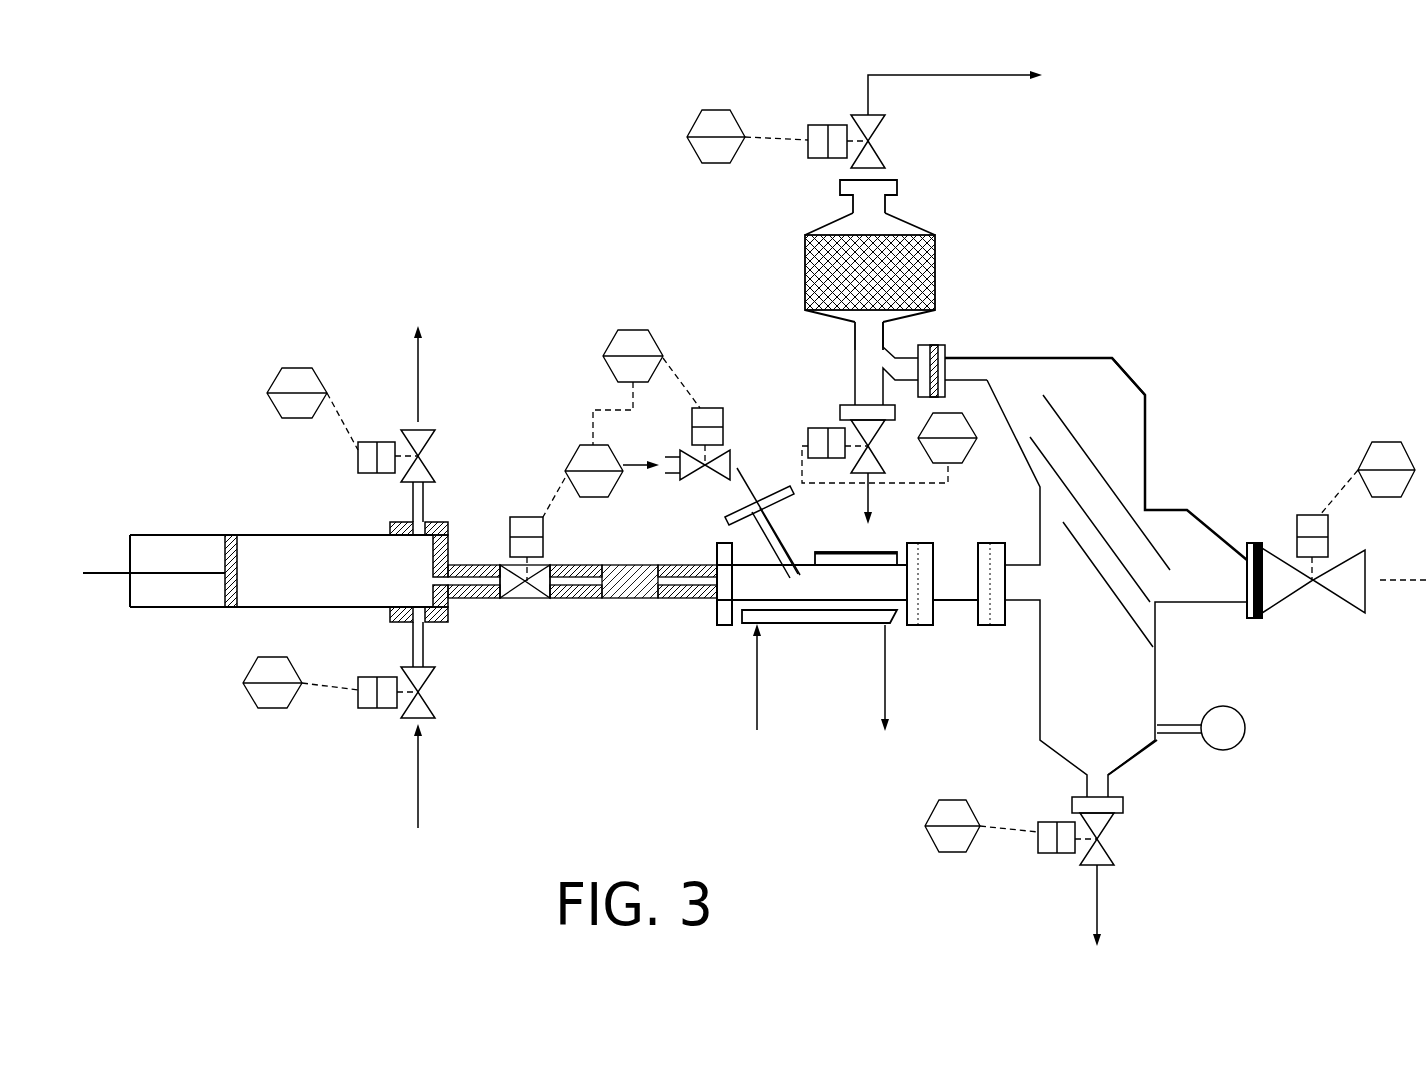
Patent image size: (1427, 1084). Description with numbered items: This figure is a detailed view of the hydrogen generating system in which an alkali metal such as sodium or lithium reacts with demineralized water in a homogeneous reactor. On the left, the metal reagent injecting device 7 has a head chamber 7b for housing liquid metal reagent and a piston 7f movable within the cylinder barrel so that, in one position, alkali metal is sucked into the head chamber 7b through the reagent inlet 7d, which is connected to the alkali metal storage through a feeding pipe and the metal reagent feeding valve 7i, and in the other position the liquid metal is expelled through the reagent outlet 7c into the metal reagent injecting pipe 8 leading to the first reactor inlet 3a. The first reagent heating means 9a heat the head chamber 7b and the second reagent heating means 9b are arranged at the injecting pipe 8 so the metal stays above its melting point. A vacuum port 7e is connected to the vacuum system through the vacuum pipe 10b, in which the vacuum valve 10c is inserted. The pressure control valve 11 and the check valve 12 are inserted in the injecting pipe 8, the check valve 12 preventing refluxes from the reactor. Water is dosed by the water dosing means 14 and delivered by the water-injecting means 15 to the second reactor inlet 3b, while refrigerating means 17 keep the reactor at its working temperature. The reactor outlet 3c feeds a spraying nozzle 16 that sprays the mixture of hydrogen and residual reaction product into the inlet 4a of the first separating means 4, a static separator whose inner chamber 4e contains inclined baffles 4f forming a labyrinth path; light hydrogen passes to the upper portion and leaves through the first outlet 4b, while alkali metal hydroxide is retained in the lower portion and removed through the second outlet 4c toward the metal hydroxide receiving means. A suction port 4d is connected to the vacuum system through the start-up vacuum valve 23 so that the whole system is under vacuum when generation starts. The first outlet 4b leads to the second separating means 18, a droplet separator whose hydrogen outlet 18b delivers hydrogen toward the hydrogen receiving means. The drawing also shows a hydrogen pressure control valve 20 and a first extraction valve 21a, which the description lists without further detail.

The first reactor inlet 3a is at (715, 578).
The second reactor inlet 3b is at (803, 552).
The reactor outlet 3c is at (913, 590).
The first separating means 4 is at (1130, 360).
The inlet 4a is at (1020, 590).
The first outlet 4b is at (945, 345).
The second outlet 4c is at (1125, 808).
The suction port 4d is at (1265, 607).
The inner chamber 4e is at (1132, 408).
The baffles 4f is at (1130, 577).
The metal reagent injecting device 7 is at (172, 532).
The head chamber 7b is at (263, 553).
The reagent outlet 7c is at (452, 595).
The reagent inlet 7d is at (432, 655).
The vacuum port 7e is at (408, 522).
The piston 7f is at (222, 597).
The metal reagent feeding valve 7i is at (358, 705).
The metal reagent injecting pipe 8 is at (575, 600).
The first reagent heating means 9a is at (425, 532).
The second reagent heating means 9b is at (685, 600).
The vacuum pipe 10b is at (417, 493).
The vacuum valve 10c is at (390, 443).
The pressure control valve 11 is at (520, 515).
The check valve 12 is at (628, 600).
The water dosing means 14 is at (718, 422).
The water-injecting means 15 is at (773, 563).
The spraying nozzle 16 is at (945, 595).
The refrigerating means 17 is at (832, 563).
The second separating means 18 is at (920, 233).
The hydrogen outlet 18b is at (880, 185).
The hydrogen pressure control valve 20 is at (835, 130).
The first extraction valve 21a is at (1047, 850).
The start-up vacuum valve 23 is at (1307, 520).